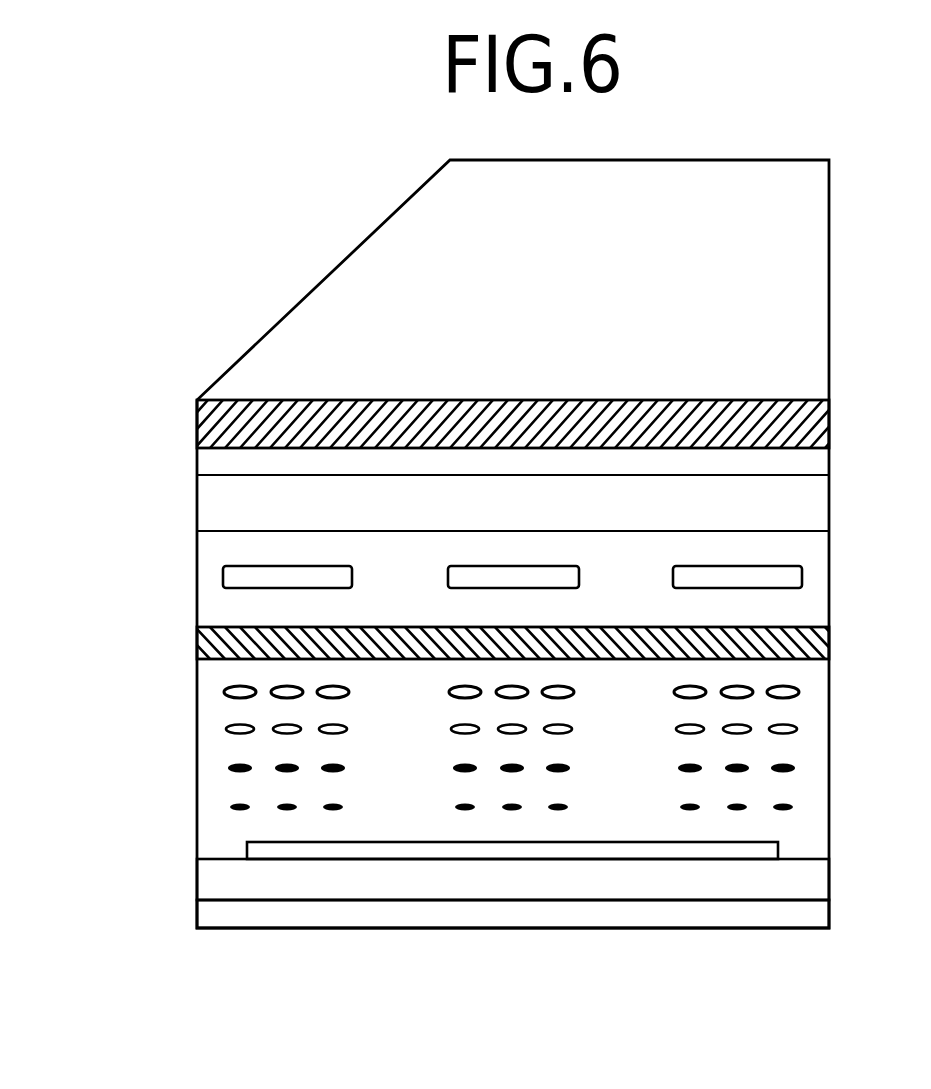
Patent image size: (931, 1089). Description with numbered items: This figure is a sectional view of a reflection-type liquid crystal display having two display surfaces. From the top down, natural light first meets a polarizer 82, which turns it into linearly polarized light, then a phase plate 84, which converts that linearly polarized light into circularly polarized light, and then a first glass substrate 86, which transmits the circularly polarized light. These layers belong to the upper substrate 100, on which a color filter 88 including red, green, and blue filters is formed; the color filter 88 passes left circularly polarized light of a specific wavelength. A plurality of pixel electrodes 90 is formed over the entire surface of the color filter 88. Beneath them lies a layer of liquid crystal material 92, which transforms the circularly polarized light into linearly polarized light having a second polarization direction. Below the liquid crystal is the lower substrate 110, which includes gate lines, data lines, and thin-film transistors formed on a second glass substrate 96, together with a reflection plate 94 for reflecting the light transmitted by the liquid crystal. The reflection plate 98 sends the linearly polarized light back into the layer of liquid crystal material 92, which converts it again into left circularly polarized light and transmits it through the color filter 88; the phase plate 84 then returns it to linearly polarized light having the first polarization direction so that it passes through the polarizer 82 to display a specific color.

The polarizer 82 is at (197, 427).
The phase plate 84 is at (197, 462).
The first glass substrate 86 is at (197, 498).
The color filter 88 is at (197, 570).
The pixel electrodes 90 is at (197, 645).
The layer of liquid crystal material 92 is at (230, 694).
The reflection plate 94 is at (247, 850).
The second glass substrate 96 is at (197, 884).
The reflection plate 98 is at (197, 918).
The upper substrate 100 is at (102, 423).
The lower substrate 110 is at (103, 828).